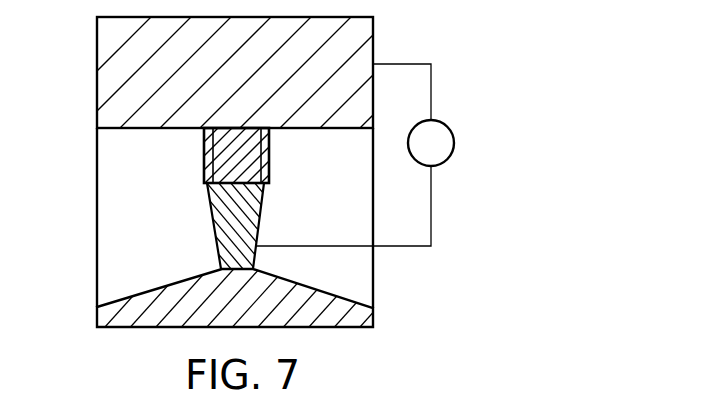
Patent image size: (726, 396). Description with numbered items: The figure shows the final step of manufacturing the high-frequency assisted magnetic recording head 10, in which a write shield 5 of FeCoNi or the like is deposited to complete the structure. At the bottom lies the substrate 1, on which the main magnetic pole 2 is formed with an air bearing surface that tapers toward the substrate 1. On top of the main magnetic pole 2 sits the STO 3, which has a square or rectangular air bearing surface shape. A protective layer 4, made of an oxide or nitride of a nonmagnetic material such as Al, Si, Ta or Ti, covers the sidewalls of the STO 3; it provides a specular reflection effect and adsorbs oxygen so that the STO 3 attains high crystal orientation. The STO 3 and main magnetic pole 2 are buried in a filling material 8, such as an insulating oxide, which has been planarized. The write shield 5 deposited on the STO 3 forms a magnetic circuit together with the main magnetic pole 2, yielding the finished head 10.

The substrate 1 is at (375, 310).
The main magnetic pole 2 is at (207, 208).
The STO 3 is at (209, 167).
The protective layer 4 is at (204, 142).
The write shield 5 is at (364, 35).
The filling material 8 is at (117, 252).
The high-frequency assisted magnetic recording head 10 is at (452, 89).